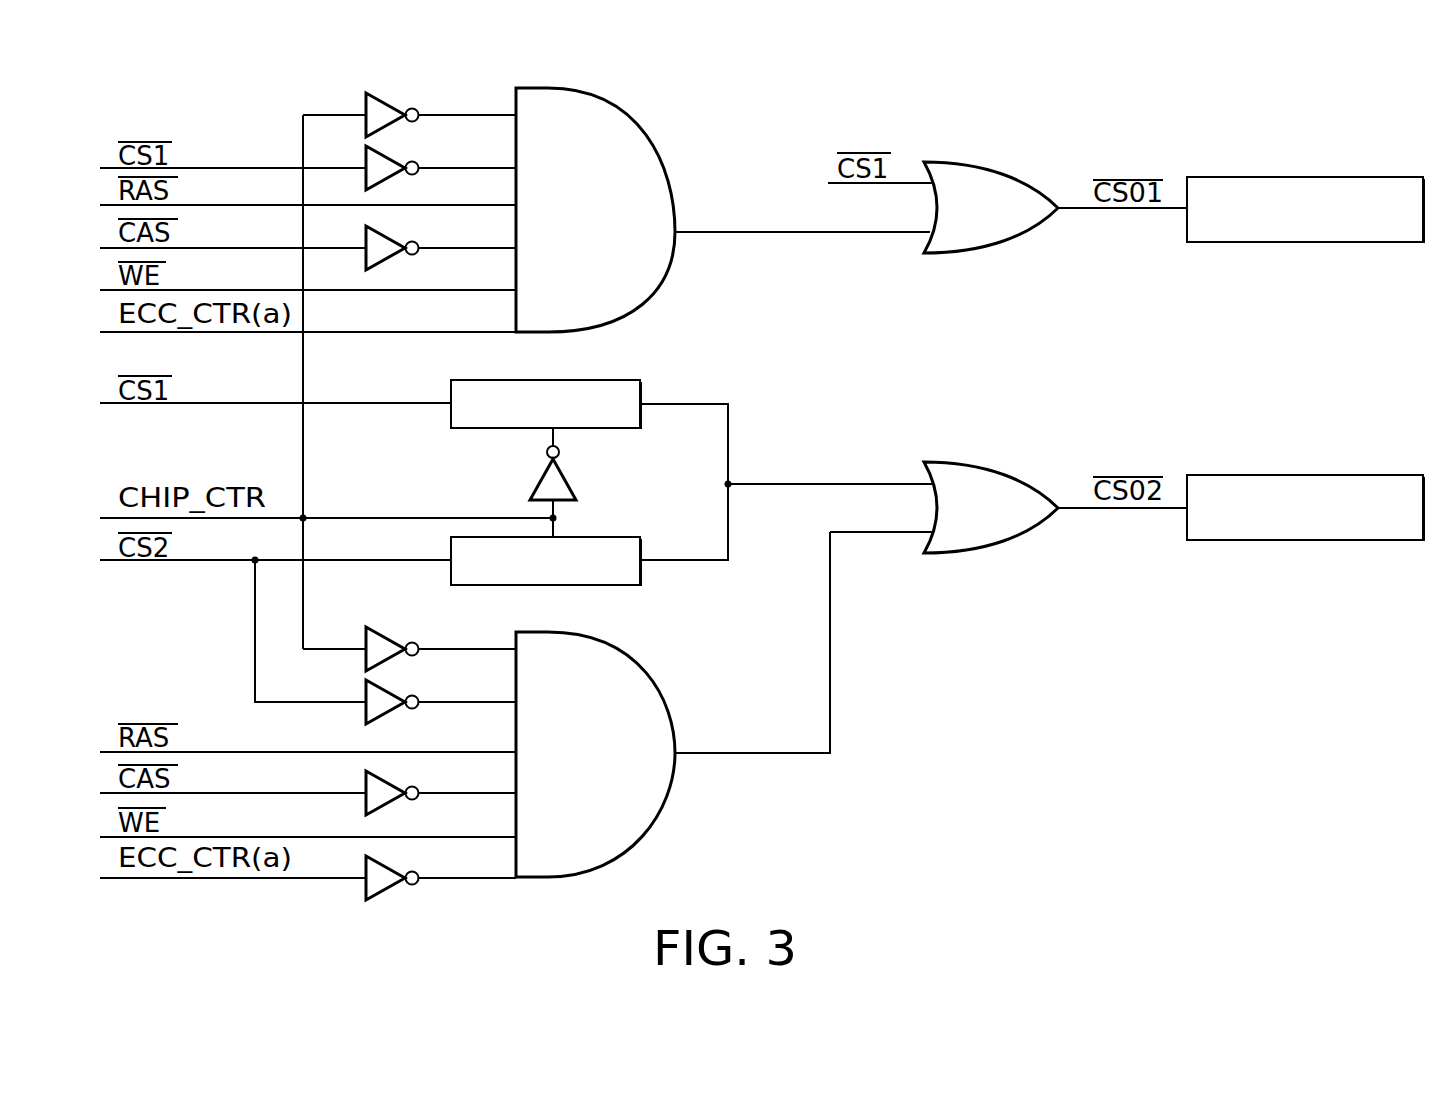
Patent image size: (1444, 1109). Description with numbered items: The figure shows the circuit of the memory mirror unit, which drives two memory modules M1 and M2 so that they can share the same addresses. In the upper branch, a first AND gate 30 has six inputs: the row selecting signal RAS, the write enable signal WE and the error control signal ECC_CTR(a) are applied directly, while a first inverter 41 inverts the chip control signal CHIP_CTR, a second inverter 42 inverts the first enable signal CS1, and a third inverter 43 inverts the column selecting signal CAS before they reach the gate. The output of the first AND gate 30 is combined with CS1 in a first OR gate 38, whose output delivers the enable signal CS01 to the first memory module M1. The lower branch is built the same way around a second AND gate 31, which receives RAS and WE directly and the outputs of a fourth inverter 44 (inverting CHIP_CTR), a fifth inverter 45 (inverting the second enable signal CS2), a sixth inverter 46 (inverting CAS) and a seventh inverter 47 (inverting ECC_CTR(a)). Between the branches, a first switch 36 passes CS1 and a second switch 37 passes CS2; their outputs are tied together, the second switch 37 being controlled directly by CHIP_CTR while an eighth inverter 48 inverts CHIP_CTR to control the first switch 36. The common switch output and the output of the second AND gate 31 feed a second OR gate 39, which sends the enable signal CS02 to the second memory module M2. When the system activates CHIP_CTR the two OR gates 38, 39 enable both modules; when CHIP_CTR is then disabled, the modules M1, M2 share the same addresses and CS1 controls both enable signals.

The first AND gate 30 is at (645, 135).
The second AND gate 31 is at (643, 677).
The first switch 36 is at (630, 380).
The second switch 37 is at (630, 537).
The first OR gate 38 is at (998, 165).
The second OR gate 39 is at (998, 465).
The first inverter 41 is at (389, 105).
The second inverter 42 is at (389, 158).
The third inverter 43 is at (389, 238).
The fourth inverter 44 is at (389, 639).
The fifth inverter 45 is at (389, 692).
The sixth inverter 46 is at (389, 783).
The seventh inverter 47 is at (389, 868).
The eighth inverter 48 is at (568, 478).
The first memory module M1 is at (1365, 177).
The second memory module M2 is at (1367, 475).